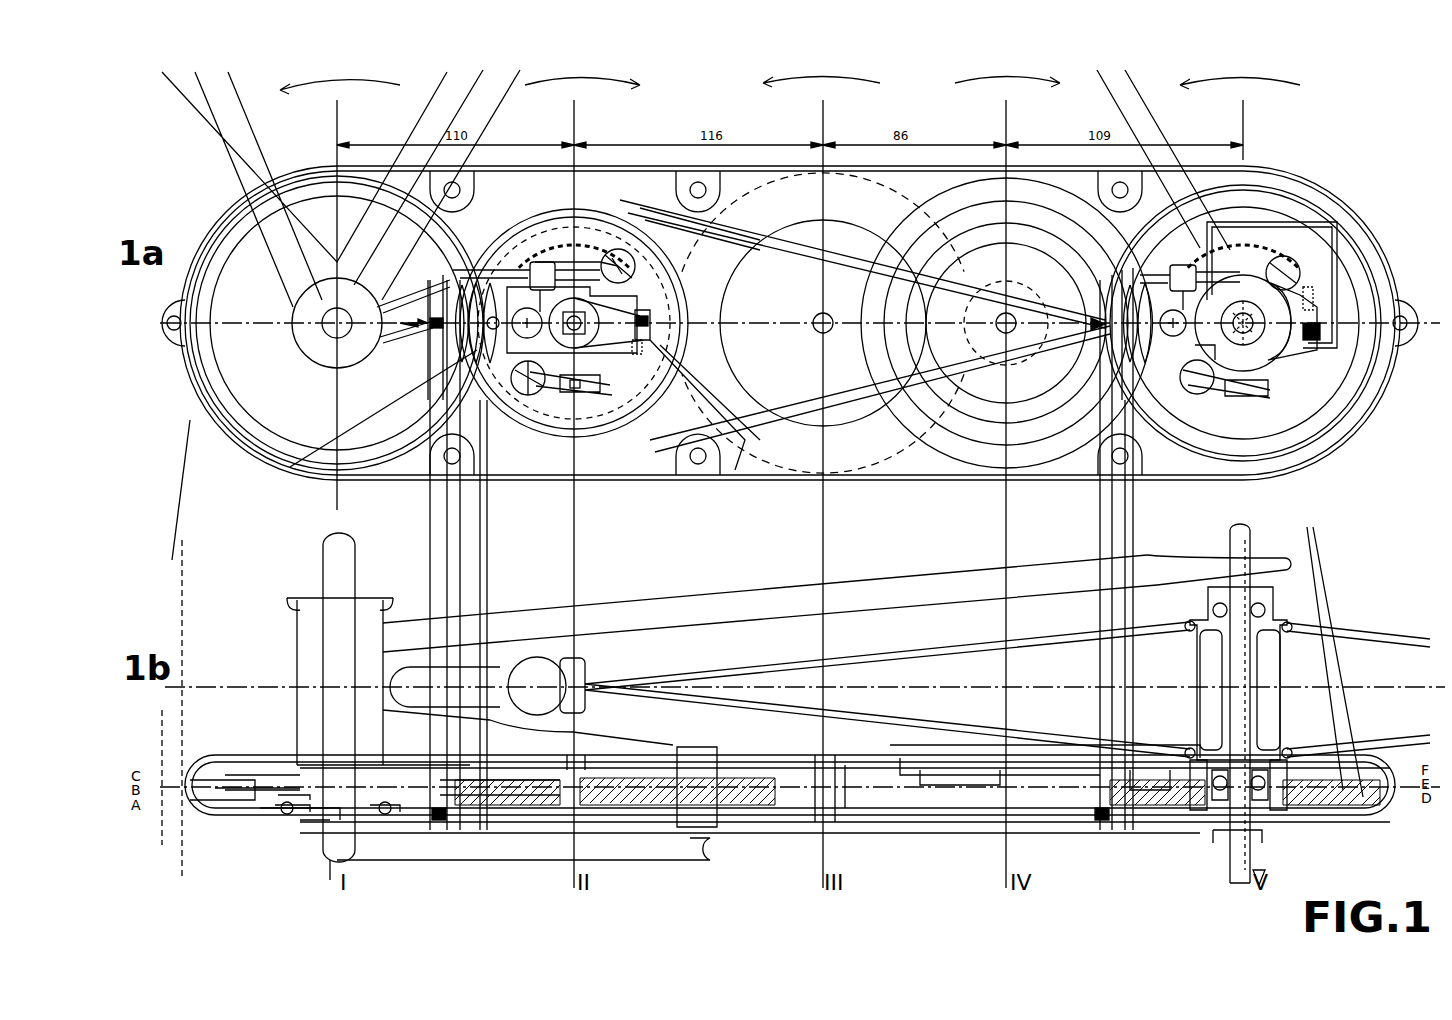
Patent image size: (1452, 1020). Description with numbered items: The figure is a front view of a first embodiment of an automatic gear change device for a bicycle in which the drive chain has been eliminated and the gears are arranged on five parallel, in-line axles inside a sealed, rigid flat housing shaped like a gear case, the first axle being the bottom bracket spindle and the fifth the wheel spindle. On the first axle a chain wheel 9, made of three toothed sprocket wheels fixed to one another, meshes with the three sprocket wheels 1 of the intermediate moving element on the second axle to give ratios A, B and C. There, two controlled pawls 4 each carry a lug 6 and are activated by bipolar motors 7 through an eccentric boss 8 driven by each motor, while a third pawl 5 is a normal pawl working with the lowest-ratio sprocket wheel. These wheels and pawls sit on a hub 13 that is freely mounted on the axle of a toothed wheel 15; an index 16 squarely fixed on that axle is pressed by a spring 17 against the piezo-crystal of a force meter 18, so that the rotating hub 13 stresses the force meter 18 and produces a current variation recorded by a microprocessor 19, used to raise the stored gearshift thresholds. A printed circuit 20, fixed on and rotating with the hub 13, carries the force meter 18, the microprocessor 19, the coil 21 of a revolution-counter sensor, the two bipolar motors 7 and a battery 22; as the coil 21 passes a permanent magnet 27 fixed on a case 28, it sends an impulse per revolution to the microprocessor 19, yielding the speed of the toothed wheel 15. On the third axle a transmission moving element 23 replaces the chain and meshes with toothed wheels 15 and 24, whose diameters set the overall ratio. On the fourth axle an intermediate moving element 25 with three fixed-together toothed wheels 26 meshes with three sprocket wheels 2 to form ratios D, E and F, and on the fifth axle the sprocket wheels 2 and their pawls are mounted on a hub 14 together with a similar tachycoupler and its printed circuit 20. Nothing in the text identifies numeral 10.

The sprocket wheels 1 is at (483, 820).
The sprocket wheels 2 is at (1292, 400).
The controlled pawls 4 is at (530, 305).
The third pawl 5 is at (430, 352).
The lug 6 is at (615, 250).
The bipolar motors 7 is at (722, 205).
The eccentric boss 8 is at (628, 262).
The chain wheel 9 is at (219, 428).
The hub 10 is at (1300, 390).
The hub 13 is at (1180, 265).
The hub 14 is at (1190, 800).
The toothed wheel 15 is at (632, 795).
The index 16 is at (612, 793).
The spring 17 is at (742, 405).
The force meter 18 is at (748, 208).
The microprocessor 19 is at (535, 262).
The printed circuit 20 is at (690, 800).
The coil of a revolution-counter sensor 21 is at (297, 418).
The electric current supply battery 22 is at (398, 190).
The transmission moving element 23 is at (845, 385).
The toothed wheel 24 is at (975, 410).
The intermediate moving element 25 is at (1000, 255).
The toothed wheels 26 is at (925, 760).
The permanent magnet 27 is at (440, 820).
The case 28 is at (215, 430).